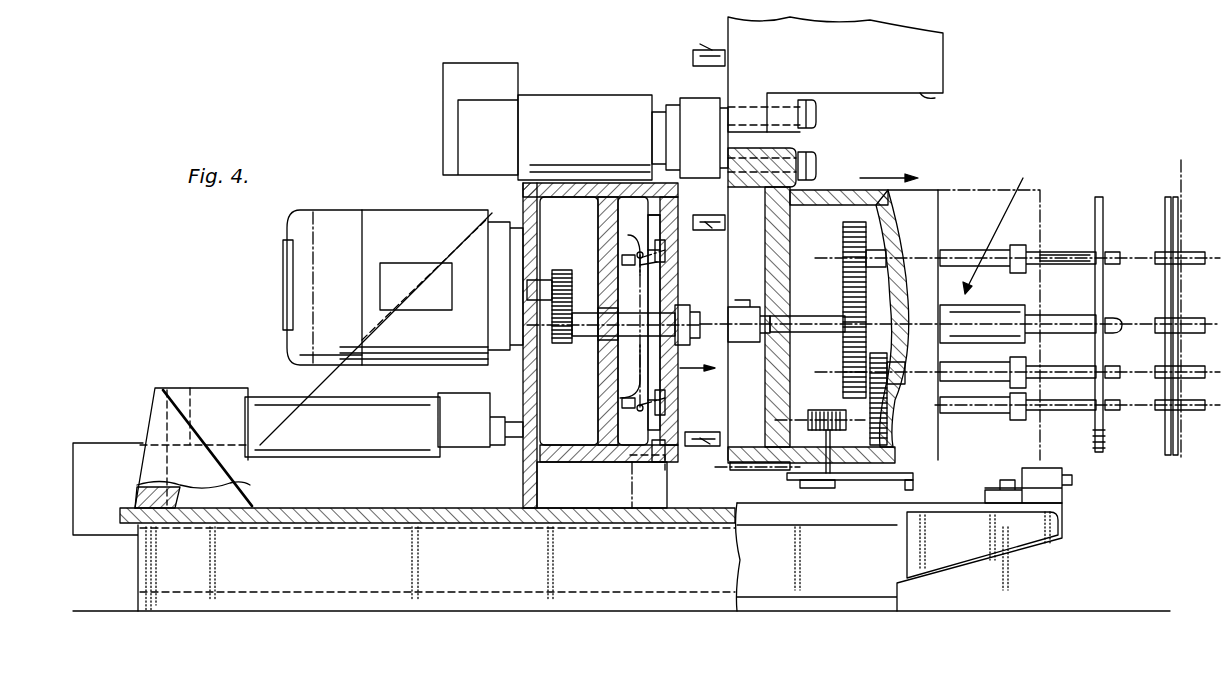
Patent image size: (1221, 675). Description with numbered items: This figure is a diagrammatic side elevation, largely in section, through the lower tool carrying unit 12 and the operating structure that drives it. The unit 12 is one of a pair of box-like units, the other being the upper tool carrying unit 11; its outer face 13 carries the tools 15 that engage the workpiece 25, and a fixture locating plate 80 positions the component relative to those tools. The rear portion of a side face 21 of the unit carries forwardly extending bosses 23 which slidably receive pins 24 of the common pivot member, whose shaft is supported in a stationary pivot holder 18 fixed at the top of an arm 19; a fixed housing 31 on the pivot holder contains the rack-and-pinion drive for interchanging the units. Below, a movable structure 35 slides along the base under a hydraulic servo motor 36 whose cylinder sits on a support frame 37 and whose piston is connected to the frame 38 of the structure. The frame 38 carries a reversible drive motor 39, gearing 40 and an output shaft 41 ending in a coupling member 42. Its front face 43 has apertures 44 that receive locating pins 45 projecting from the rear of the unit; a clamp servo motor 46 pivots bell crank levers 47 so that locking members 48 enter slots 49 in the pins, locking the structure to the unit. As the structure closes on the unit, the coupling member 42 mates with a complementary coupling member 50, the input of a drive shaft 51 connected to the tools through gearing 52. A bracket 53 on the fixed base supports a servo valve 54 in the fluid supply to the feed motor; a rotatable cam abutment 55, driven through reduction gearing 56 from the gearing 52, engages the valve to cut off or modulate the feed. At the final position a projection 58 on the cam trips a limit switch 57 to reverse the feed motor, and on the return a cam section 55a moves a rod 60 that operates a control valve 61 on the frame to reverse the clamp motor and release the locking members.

The upper tool carrying unit 11 is at (928, 42).
The lower tool carrying unit 12 is at (933, 190).
The outer face 13 is at (940, 216).
The tools 15 is at (1001, 223).
The pivot holder 18 is at (598, 100).
The arm 19 is at (520, 187).
The side face 21 is at (940, 98).
The bosses 23 is at (795, 152).
The pins 24 is at (818, 110).
The workpiece 25 is at (1172, 182).
The fixed housing 31 is at (468, 120).
The movable structure 35 is at (510, 481).
The servo motor 36 is at (272, 394).
The support frame 37 is at (158, 398).
The frame 38 is at (575, 465).
The drive motor 39 is at (352, 215).
The gearing 40 is at (578, 338).
The output shaft 41 is at (672, 312).
The coupling member 42 is at (688, 326).
The front face 43 is at (675, 380).
The apertures 44 is at (675, 225).
The locating pins 45 is at (693, 59).
The servo motor 46 is at (636, 378).
The bell crank levers 47 is at (630, 240).
The locking members 48 is at (668, 255).
The slots 49 is at (712, 50).
The coupling member 50 is at (745, 310).
The drive shaft 51 is at (800, 300).
The gearing 52 is at (870, 300).
The bracket 53 is at (1010, 540).
The servo valve 54 is at (1010, 465).
The abutment 55 is at (885, 472).
The cam section 55a is at (815, 490).
The reduction gearing 56 is at (828, 410).
The limit switch 57 is at (1050, 486).
The projection 58 is at (914, 486).
The rod 60 is at (725, 470).
The control valve 61 is at (633, 510).
The plate 80 is at (1100, 197).